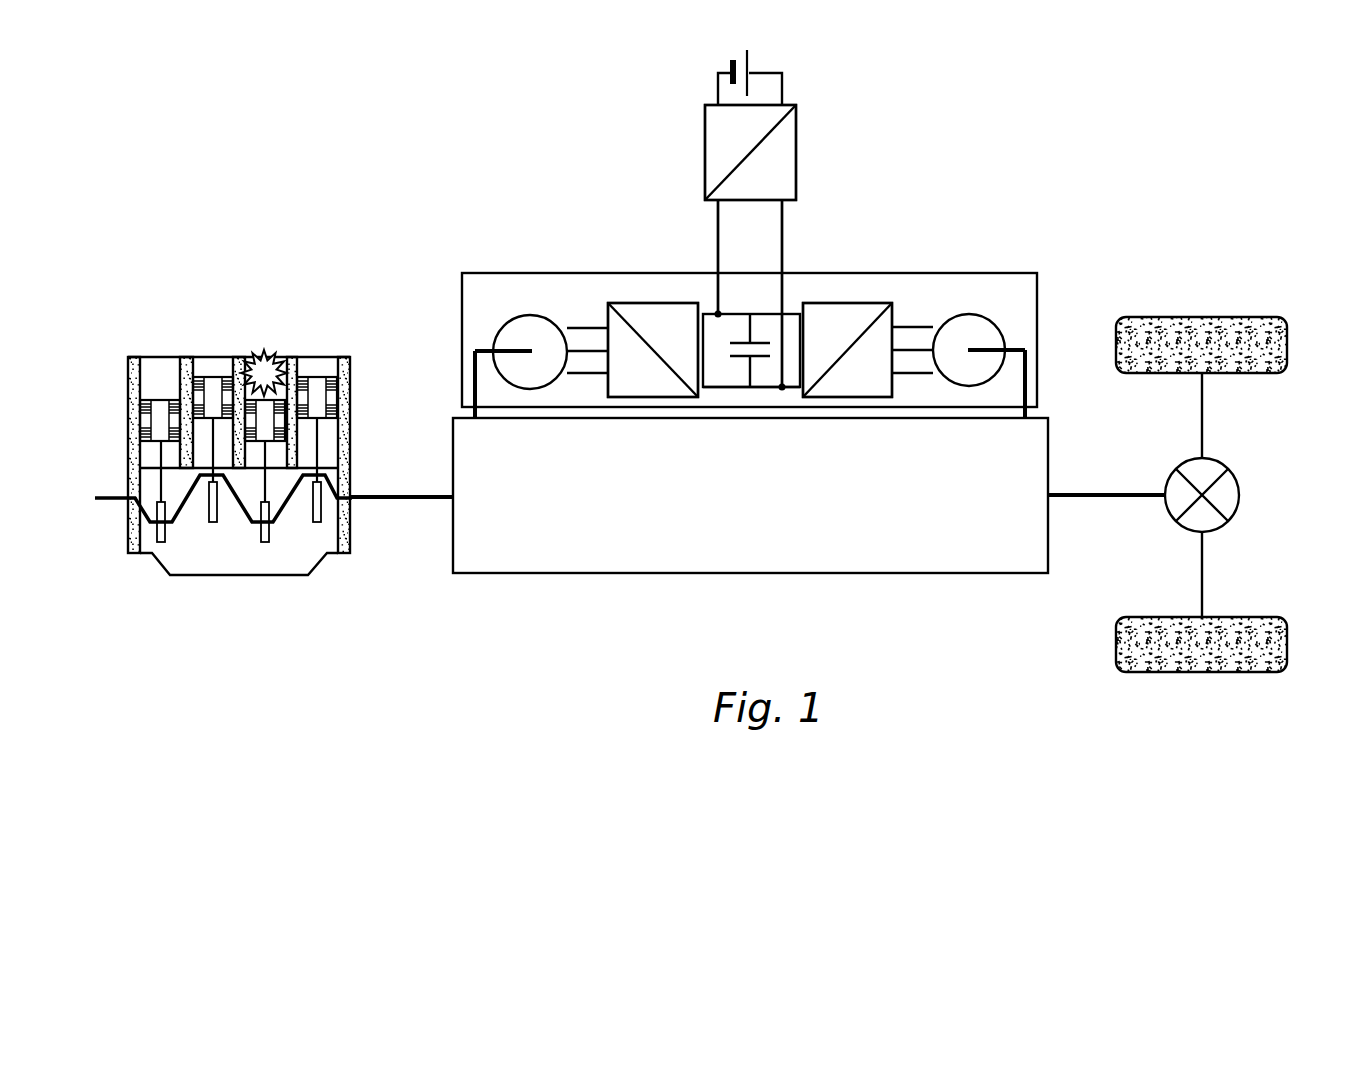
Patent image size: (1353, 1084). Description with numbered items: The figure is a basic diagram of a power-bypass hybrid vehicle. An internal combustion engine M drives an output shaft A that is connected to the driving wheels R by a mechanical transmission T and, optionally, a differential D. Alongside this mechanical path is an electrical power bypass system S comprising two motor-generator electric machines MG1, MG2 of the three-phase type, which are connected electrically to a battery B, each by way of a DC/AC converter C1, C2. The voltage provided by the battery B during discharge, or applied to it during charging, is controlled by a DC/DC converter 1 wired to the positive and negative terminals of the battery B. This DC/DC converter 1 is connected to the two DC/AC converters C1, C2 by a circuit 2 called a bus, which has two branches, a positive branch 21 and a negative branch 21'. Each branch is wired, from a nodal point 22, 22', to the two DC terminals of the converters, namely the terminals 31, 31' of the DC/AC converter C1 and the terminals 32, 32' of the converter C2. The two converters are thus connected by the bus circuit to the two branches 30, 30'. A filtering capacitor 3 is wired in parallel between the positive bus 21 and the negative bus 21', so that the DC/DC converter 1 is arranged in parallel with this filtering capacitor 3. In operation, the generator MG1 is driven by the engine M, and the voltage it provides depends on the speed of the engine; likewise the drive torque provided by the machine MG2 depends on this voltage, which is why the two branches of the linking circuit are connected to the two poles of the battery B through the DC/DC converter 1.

The electrical power bypass system S is at (660, 126).
The battery B is at (731, 63).
The DC/DC converter 1 is at (797, 127).
The bus circuit 2 is at (683, 205).
The positive branch 21 is at (681, 257).
The negative branch 21' is at (825, 293).
The nodal point 22 is at (683, 282).
The nodal point 22' is at (806, 427).
The DC/AC converter C1 is at (618, 302).
The DC/AC converter C2 is at (884, 303).
The DC terminal 31 is at (653, 336).
The DC terminal 32 is at (847, 336).
The DC terminal 31' is at (618, 389).
The DC terminal 32' is at (877, 388).
The filtering capacitor 3 is at (740, 358).
The bus branch 30 is at (782, 285).
The bus branch 30' is at (751, 428).
The motor-generator electric machine MG1 is at (502, 315).
The motor-generator electric machine MG2 is at (992, 318).
The engine M is at (128, 398).
The shaft A is at (408, 498).
The mechanical transmission T is at (641, 542).
The differential D is at (1240, 487).
The driving wheels R is at (1285, 341).